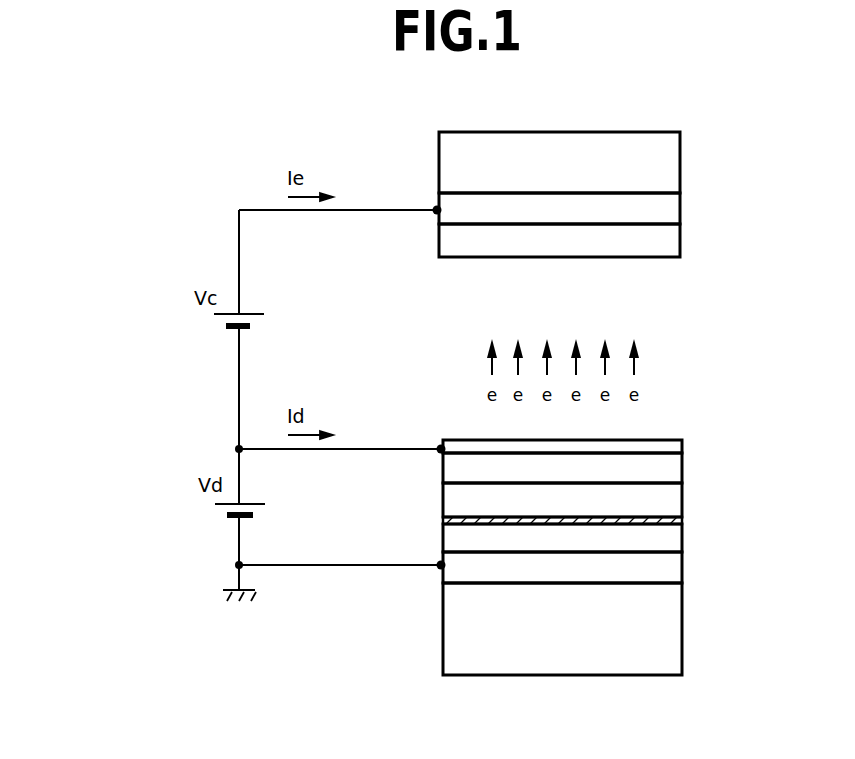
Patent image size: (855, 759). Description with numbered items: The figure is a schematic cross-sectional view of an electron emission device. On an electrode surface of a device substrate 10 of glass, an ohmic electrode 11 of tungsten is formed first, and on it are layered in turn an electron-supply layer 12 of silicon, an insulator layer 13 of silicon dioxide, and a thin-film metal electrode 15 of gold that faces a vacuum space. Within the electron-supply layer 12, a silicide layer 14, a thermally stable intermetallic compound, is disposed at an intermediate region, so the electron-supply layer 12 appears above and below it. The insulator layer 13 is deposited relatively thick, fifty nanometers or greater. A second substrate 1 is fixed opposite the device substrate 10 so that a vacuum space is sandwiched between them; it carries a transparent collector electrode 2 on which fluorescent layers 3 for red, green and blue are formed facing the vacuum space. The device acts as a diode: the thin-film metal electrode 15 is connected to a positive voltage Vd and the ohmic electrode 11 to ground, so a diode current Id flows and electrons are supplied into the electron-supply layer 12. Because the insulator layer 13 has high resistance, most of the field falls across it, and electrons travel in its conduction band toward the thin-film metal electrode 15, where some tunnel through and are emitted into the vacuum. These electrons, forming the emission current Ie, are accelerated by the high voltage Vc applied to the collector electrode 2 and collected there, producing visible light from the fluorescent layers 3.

The second substrate 1 is at (669, 158).
The collector electrode 2 is at (670, 207).
The fluorescent layers 3 is at (675, 240).
The device substrate 10 is at (675, 640).
The ohmic electrode 11 is at (676, 568).
The electron-supply layer 12 is at (672, 498).
The insulator layer 13 is at (676, 468).
The silicide layer 14 is at (442, 521).
The thin-film metal electrode 15 is at (682, 445).